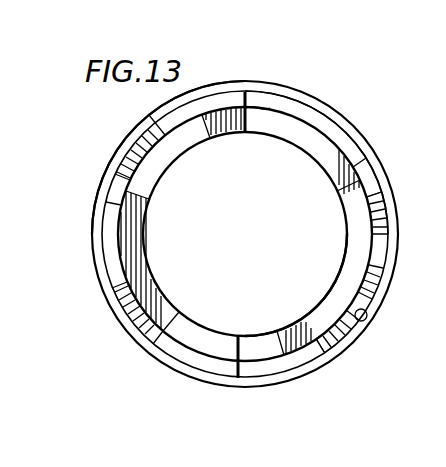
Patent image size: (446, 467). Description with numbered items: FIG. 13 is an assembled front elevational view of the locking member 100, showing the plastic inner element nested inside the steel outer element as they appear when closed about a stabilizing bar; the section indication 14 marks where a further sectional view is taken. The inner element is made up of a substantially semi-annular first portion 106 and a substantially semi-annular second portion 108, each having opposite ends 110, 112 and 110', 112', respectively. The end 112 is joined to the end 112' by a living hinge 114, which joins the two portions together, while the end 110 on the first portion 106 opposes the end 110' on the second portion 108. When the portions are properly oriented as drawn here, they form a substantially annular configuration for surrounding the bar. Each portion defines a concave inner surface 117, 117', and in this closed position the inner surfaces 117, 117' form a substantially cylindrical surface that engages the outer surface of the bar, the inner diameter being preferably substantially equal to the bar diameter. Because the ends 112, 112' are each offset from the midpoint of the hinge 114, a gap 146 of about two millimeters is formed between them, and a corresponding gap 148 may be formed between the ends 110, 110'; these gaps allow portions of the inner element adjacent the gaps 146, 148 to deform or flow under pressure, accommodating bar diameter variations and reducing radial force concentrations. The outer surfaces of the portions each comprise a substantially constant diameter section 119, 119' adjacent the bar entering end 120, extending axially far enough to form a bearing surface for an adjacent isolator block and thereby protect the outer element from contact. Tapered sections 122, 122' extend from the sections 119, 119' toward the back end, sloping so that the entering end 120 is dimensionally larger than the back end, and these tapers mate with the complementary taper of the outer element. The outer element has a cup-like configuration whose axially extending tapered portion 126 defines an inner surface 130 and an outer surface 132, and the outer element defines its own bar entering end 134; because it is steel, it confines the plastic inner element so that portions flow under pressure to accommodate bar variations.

The locking member 100 is at (343, 58).
The first portion 106 is at (350, 347).
The second portion 108 is at (152, 107).
The end 110 is at (274, 343).
The end 110' is at (217, 312).
The end 112 is at (298, 95).
The end 112' is at (207, 83).
The living hinge 114 is at (245, 92).
The inner surface 117 is at (296, 285).
The inner surface 117' is at (245, 234).
The constant diameter section 119 is at (386, 173).
The constant diameter section 119' is at (117, 258).
The bar entering end 120 is at (340, 286).
The tapered section 122 is at (269, 234).
The tapered section 122' is at (114, 234).
The tapered portion 126 is at (362, 133).
The inner surface 130 is at (367, 316).
The outer surface 132 is at (95, 263).
The bar entering end 134 is at (398, 214).
The gap 146 is at (246, 134).
The gap 148 is at (240, 345).
The section line 14- 14 is at (245, 52).